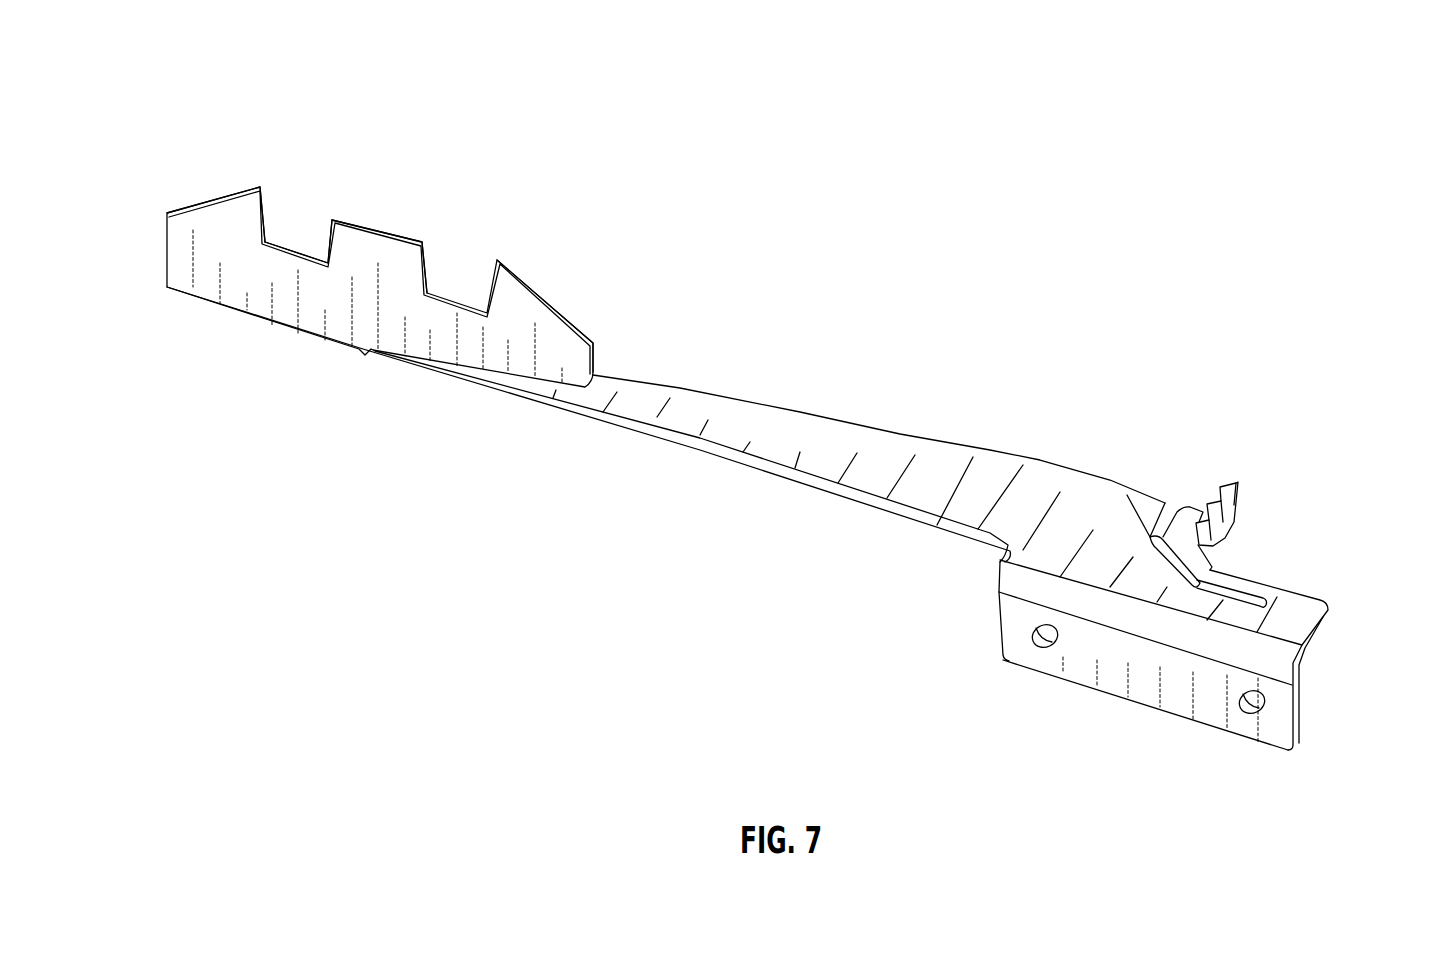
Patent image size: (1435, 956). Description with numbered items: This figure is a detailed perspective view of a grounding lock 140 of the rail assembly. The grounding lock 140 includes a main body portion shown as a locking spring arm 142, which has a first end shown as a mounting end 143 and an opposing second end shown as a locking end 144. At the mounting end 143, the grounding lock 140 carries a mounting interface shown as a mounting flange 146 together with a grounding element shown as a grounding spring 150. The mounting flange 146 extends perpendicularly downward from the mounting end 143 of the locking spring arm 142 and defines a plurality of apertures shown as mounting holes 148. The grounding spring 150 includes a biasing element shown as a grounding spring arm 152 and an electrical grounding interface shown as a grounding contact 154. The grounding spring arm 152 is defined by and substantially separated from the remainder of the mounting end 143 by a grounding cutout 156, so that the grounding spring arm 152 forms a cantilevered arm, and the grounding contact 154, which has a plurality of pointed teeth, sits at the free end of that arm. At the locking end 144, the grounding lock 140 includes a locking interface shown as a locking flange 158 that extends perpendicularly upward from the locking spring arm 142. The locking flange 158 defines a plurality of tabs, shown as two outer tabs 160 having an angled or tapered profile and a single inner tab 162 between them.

The grounding lock 140 is at (130, 82).
The locking spring arm 142 is at (1003, 468).
The mounting end 143 is at (1328, 710).
The locking end 144 is at (148, 218).
The mounting flange 146 is at (1113, 680).
The mounting holes 148 is at (1038, 647).
The grounding spring 150 is at (1255, 502).
The grounding spring arm 152 is at (1263, 592).
The grounding contact 154 is at (1225, 482).
The grounding cutout 156 is at (1147, 530).
The locking flange 158 is at (360, 182).
The outer tabs 160 is at (197, 222).
The inner tab 162 is at (380, 248).